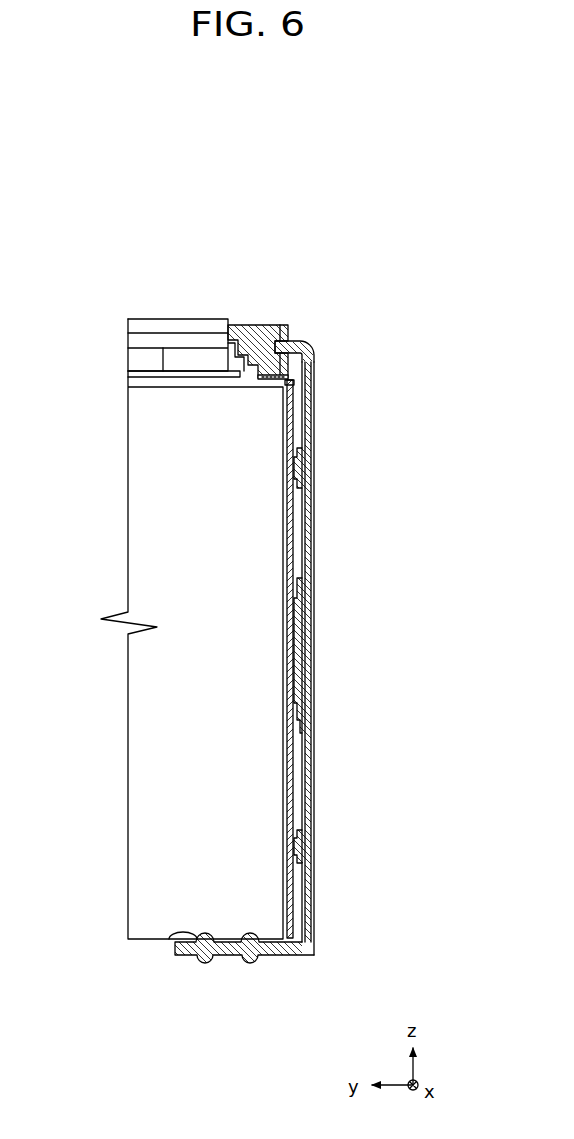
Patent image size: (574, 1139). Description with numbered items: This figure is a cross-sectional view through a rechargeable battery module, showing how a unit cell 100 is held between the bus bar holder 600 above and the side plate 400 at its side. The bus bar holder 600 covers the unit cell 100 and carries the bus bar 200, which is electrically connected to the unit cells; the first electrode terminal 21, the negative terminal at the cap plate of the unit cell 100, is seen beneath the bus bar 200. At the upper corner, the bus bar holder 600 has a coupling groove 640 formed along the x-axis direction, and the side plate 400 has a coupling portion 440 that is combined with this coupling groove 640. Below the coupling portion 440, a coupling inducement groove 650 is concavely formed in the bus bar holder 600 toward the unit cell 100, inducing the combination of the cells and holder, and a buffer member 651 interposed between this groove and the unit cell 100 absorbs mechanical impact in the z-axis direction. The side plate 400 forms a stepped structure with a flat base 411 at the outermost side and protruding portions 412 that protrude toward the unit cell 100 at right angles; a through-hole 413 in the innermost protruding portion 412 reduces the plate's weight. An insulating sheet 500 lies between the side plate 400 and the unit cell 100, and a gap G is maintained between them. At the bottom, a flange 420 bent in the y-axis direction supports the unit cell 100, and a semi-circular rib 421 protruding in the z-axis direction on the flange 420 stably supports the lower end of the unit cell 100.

The unit cell 100 is at (155, 793).
The bus bar 200 is at (178, 335).
The first electrode terminal 21 is at (175, 362).
The bus bar holder 600 is at (255, 335).
The coupling groove 640 is at (280, 340).
The coupling inducement groove 650 is at (262, 381).
The buffer member 651 is at (277, 386).
The insulating sheet 500 is at (290, 897).
The side plate 400 is at (253, 663).
The coupling portion 440 is at (293, 351).
The base 411 is at (310, 403).
The protruding portion 412 is at (300, 467).
The through-hole 413 is at (297, 555).
The flange 420 is at (228, 957).
The rib 421 is at (165, 946).
The gap G is at (350, 658).